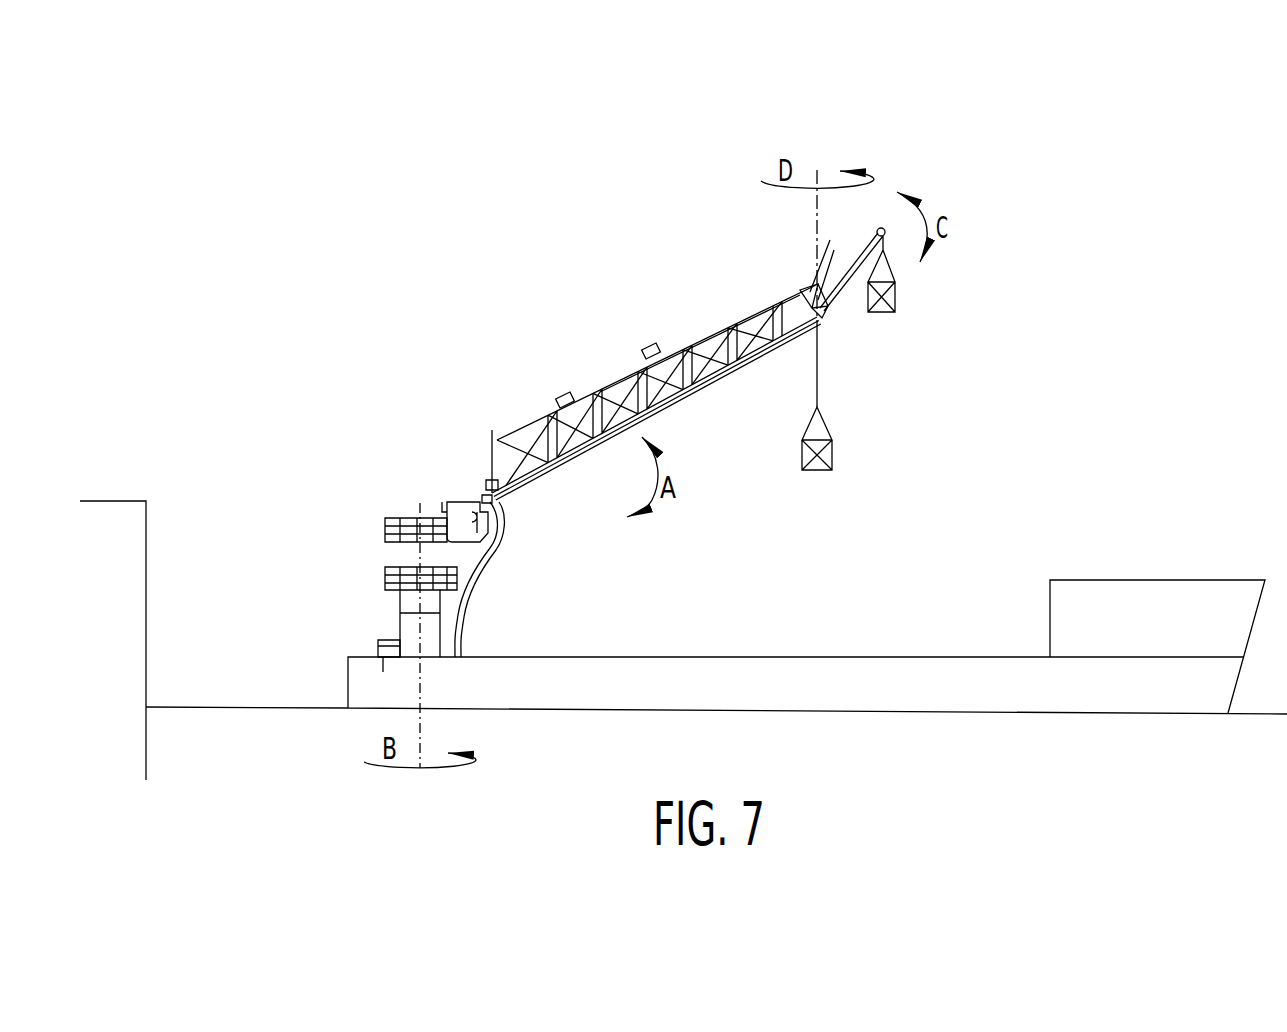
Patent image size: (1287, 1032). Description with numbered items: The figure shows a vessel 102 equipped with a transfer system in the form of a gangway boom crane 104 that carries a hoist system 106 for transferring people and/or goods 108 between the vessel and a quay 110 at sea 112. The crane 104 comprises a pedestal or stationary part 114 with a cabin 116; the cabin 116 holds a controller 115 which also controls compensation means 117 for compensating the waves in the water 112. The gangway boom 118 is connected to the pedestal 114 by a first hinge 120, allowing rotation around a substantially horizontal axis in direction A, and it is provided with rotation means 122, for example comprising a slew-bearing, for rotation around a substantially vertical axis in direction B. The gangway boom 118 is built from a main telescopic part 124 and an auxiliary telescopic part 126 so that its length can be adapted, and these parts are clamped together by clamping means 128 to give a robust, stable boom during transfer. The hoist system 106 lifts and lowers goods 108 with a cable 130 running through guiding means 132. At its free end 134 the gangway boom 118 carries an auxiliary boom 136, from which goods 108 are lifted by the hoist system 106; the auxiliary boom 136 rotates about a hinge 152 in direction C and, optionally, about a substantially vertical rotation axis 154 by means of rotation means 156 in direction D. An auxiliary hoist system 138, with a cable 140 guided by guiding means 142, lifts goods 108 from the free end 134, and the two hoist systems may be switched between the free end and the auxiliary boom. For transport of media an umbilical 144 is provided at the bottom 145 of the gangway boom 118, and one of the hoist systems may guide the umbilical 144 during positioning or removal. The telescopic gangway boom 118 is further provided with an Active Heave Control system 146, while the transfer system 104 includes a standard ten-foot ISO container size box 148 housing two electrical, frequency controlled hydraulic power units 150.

The vessel 102 is at (1064, 430).
The gangway boom crane 104 is at (427, 263).
The hoist system 106 is at (837, 168).
The goods 108 is at (898, 291).
The quay 110 is at (120, 517).
The sea 112 is at (220, 707).
The pedestal 114 is at (412, 622).
The controller 115 is at (377, 495).
The cabin 116 is at (455, 503).
The compensation means 117 is at (430, 448).
The gangway boom 118 is at (652, 360).
The first hinge 120 is at (497, 507).
The rotation means 122 is at (358, 527).
The main telescopic part 124 is at (522, 426).
The auxiliary telescopic part 126 is at (732, 322).
The clamping means 128 is at (652, 346).
The cable 130 is at (796, 284).
The guiding means 132 is at (834, 303).
The free end 134 is at (760, 227).
The auxiliary boom 136 is at (830, 282).
The auxiliary hoist system 138 is at (793, 425).
The cable 140 is at (820, 393).
The guiding means 142 is at (813, 336).
The umbilical 144 is at (470, 577).
The bottom 145 is at (596, 472).
The Active Heave Control system 146 is at (623, 572).
The standard container size box 148 is at (372, 638).
The hydraulic power units 150 is at (383, 660).
The hinge 152 is at (822, 320).
The vertical rotation axis 154 is at (815, 212).
The rotation means 156 is at (857, 237).